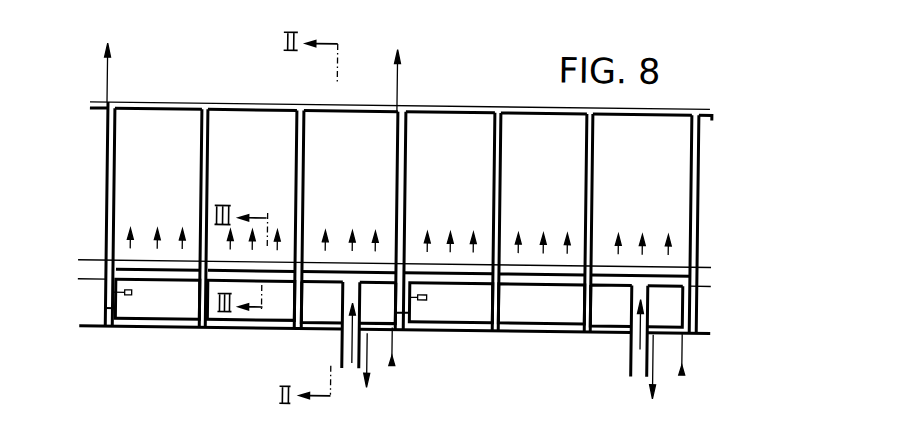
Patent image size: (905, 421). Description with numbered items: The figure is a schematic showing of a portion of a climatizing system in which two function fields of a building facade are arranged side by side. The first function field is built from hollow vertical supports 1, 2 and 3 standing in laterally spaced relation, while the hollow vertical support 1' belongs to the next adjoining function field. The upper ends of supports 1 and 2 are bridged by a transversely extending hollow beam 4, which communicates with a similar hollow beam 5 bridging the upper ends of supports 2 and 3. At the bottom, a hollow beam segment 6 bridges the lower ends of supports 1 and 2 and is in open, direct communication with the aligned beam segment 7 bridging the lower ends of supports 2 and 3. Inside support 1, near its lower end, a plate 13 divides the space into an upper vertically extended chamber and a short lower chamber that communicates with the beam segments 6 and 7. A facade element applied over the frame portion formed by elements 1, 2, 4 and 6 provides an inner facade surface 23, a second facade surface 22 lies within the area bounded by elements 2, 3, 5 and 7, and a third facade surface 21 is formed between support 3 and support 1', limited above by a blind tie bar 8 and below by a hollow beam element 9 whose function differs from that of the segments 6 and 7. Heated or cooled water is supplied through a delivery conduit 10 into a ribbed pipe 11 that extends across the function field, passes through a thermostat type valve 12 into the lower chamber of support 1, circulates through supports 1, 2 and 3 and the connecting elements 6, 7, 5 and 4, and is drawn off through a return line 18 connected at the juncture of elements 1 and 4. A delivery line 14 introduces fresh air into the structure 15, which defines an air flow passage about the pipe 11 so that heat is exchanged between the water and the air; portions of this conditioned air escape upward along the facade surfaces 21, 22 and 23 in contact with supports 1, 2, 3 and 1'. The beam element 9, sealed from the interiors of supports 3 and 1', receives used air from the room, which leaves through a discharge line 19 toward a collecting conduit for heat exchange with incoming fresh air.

The hollow vertical support 1 is at (89, 214).
The hollow vertical support 1' is at (420, 221).
The hollow vertical support 2 is at (204, 181).
The hollow vertical support 3 is at (298, 181).
The hollow beam 4 is at (155, 107).
The hollow beam 5 is at (248, 106).
The hollow beam segment 6 is at (158, 328).
The hollow beam segment 7 is at (256, 328).
The blind tie bar 8 is at (341, 105).
The hollow beam element 9 is at (325, 326).
The delivery conduit 10 is at (396, 342).
The ribbed pipe 11 is at (334, 264).
The valve 12 is at (134, 291).
The plate 13 is at (108, 306).
The delivery line 14 is at (355, 348).
The air flow passage structure 15 is at (384, 265).
The return line 18 is at (102, 68).
The discharge line 19 is at (375, 357).
The third facade surface 21 is at (360, 153).
The second facade surface 22 is at (260, 150).
The facade surface 23 is at (170, 151).